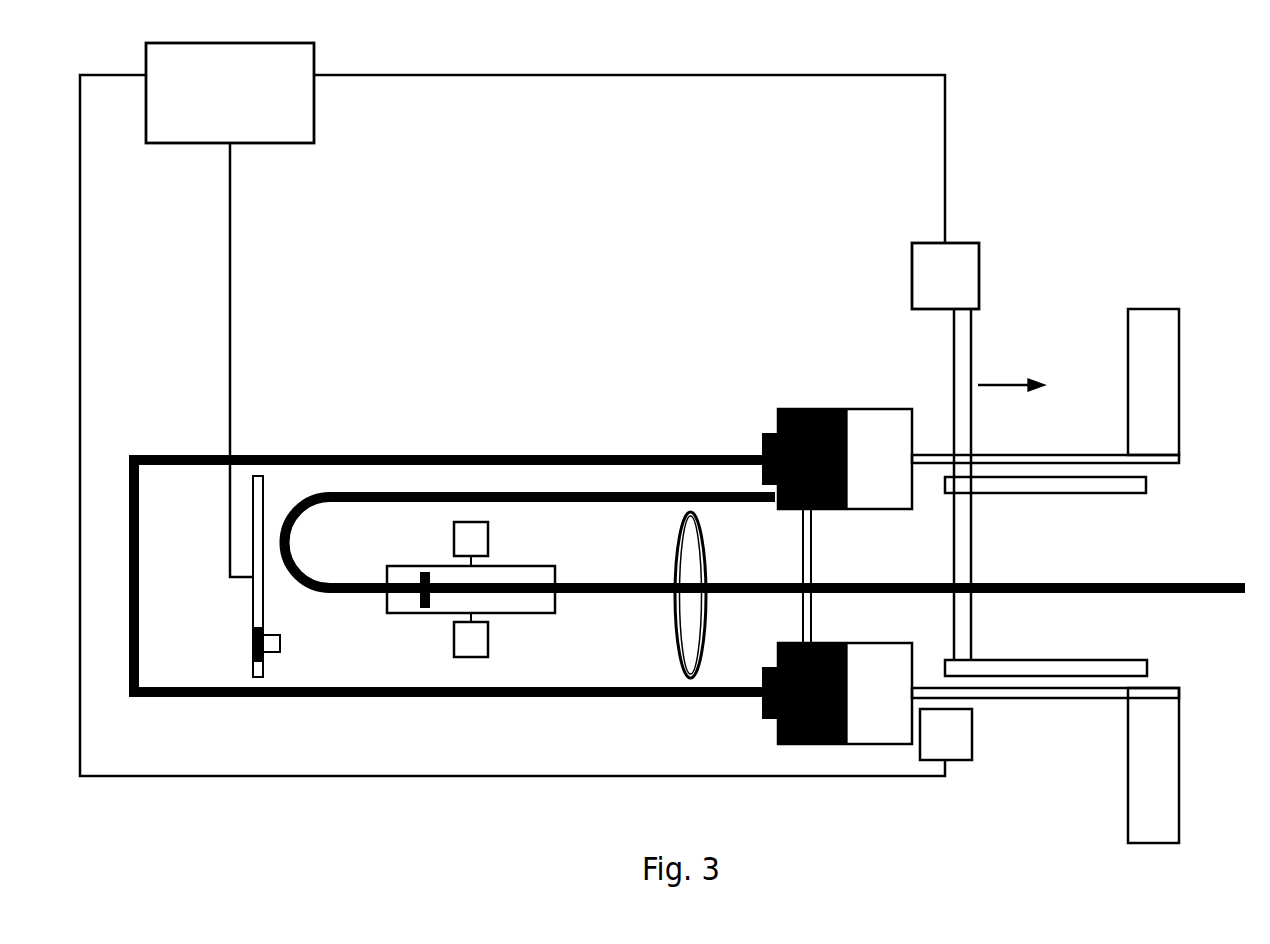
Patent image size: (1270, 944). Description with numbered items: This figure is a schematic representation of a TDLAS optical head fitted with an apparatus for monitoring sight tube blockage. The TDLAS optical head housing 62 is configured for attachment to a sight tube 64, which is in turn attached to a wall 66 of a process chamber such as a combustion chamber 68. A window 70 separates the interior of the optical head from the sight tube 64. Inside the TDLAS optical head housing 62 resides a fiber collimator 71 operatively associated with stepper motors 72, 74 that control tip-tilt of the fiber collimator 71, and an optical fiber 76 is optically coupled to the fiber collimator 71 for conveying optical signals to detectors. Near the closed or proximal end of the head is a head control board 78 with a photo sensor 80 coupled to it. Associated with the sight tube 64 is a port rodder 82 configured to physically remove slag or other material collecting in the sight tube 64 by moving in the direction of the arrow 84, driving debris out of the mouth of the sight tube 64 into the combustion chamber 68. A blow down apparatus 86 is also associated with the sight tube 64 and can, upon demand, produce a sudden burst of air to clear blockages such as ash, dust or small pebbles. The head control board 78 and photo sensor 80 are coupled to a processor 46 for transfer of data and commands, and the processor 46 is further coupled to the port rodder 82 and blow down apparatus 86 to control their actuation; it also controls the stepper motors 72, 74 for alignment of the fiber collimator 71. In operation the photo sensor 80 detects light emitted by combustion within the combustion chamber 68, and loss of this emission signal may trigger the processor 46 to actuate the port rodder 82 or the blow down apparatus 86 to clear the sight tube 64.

The processor 46 is at (230, 93).
The TDLAS optical head housing 62 is at (630, 455).
The sight tube 64 is at (1045, 698).
The wall 66 is at (1179, 385).
The combustion chamber 68 is at (1067, 478).
The window 70 is at (811, 565).
The fiber collimator 71 is at (555, 598).
The stepper motor 72 is at (488, 638).
The stepper motor 74 is at (488, 541).
The optical fiber 76 is at (555, 490).
The head control board 78 is at (263, 487).
The photo sensor 80 is at (253, 645).
The port rodder 82 is at (1013, 242).
The arrow 84 is at (1003, 383).
The blow down apparatus 86 is at (972, 735).